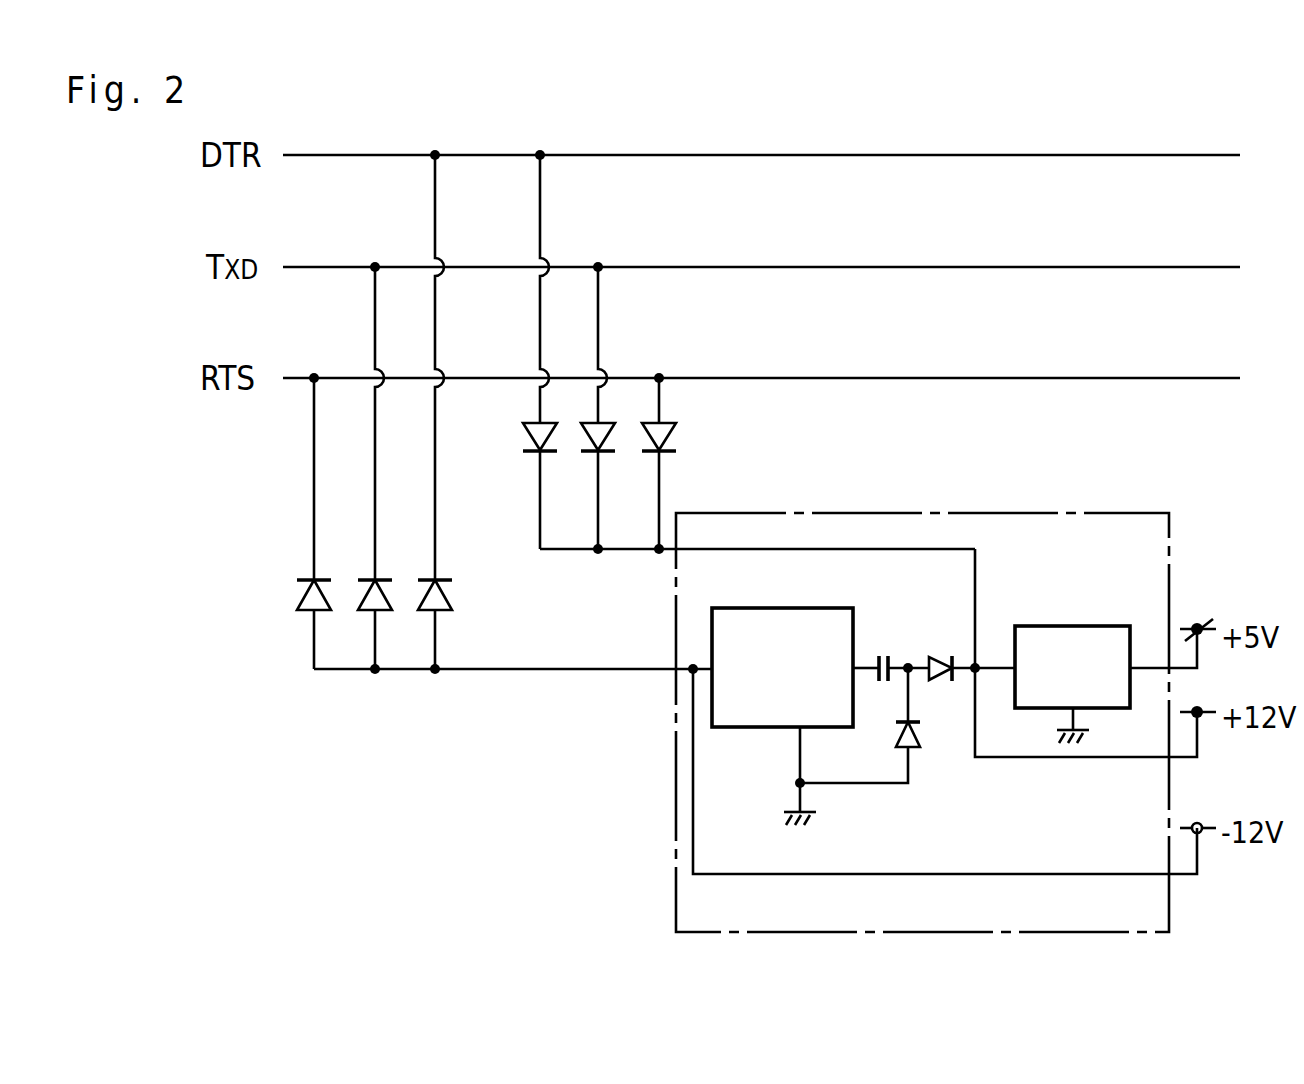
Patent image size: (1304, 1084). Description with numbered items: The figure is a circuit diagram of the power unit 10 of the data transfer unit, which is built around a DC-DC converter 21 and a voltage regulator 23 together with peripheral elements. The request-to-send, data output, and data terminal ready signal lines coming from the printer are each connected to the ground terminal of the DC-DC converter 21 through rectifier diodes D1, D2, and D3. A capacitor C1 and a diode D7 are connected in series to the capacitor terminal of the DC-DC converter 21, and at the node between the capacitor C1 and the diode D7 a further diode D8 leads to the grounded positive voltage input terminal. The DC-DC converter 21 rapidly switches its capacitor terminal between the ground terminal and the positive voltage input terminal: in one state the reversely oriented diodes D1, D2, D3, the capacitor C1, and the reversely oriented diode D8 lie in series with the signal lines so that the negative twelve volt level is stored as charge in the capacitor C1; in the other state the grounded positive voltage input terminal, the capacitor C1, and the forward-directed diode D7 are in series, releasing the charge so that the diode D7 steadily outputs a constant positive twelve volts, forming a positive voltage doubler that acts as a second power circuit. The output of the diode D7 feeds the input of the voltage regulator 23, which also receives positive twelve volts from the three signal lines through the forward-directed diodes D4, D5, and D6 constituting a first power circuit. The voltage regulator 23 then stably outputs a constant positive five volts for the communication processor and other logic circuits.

The power unit 10 is at (1033, 513).
The DC-DC converter 21 is at (748, 728).
The voltage regulator 23 is at (1066, 626).
The diode D1 is at (301, 597).
The diode D2 is at (386, 598).
The diode D3 is at (446, 598).
The diode D4 is at (530, 434).
The diode D5 is at (590, 436).
The diode D6 is at (670, 440).
The diode D7 is at (942, 655).
The diode D8 is at (918, 736).
The capacitor C1 is at (883, 655).